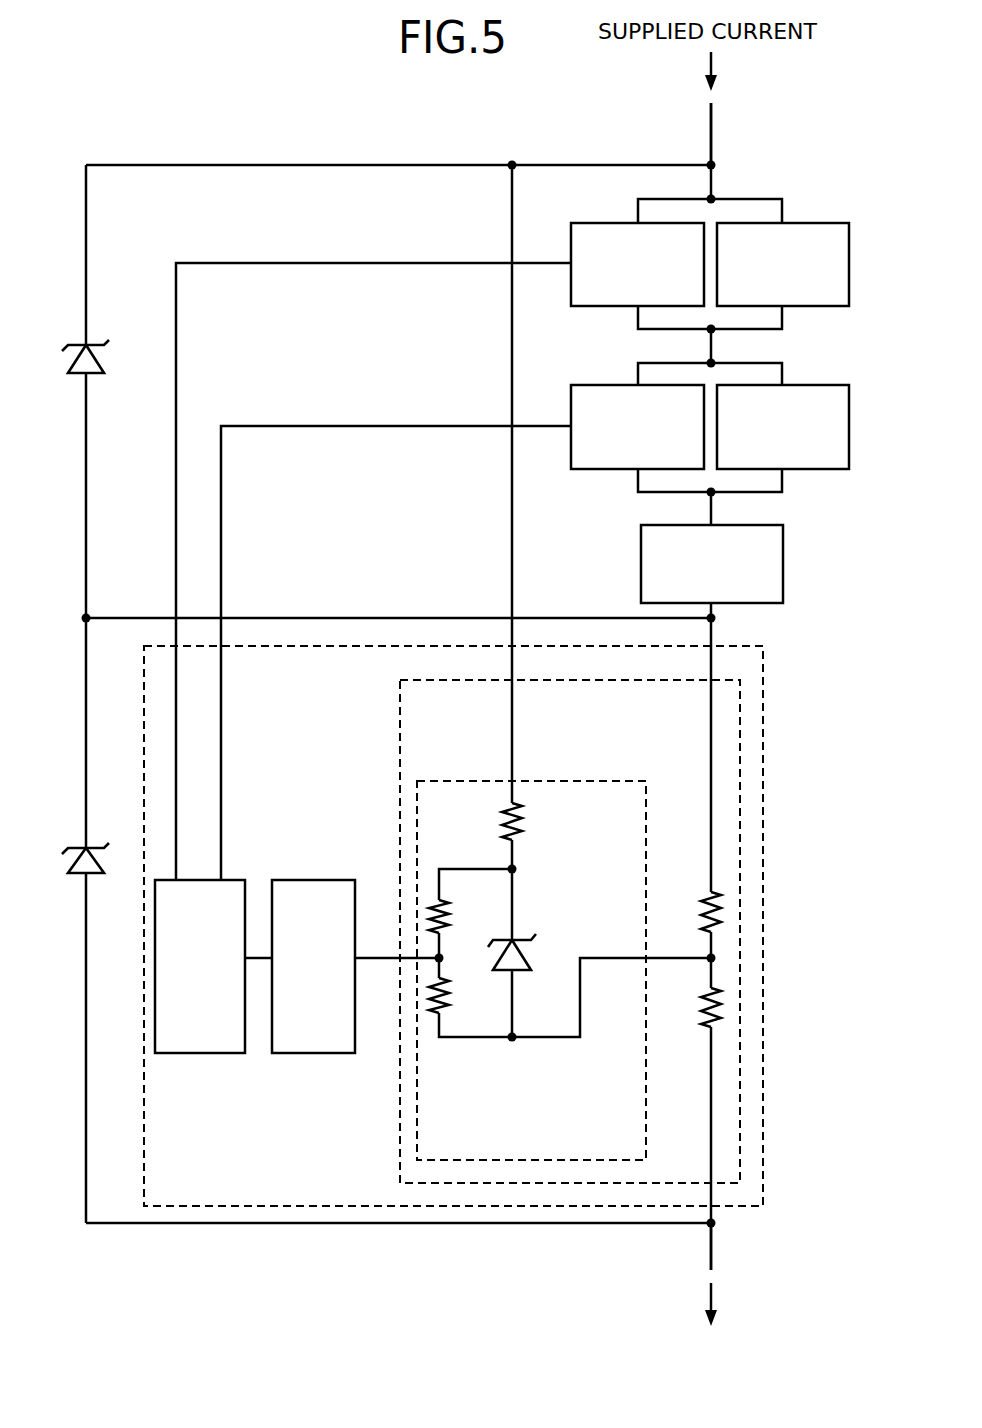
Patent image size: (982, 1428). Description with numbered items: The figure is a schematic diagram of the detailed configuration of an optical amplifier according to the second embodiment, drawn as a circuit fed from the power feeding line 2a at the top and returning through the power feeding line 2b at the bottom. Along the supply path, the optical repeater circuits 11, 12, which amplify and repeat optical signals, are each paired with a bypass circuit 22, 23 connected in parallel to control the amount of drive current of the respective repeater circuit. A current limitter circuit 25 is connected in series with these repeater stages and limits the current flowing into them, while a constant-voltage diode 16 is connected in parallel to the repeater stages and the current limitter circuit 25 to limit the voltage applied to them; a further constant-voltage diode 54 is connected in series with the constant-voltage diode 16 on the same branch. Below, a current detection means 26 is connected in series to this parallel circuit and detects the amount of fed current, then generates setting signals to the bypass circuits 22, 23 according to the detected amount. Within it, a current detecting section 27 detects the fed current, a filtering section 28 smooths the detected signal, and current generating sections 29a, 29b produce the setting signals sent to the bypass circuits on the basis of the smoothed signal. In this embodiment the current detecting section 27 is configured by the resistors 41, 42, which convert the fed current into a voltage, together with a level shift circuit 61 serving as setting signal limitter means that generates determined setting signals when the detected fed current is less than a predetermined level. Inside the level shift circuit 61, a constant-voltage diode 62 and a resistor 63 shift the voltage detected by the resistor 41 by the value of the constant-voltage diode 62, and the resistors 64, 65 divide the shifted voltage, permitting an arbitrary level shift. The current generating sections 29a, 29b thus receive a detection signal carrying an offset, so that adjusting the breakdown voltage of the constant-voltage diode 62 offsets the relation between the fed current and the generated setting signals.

The power feeding line 2a is at (711, 140).
The power feeding line 2b is at (716, 1250).
The optical repeater circuit 11 is at (820, 222).
The optical repeater circuit 12 is at (820, 385).
The constant-voltage diode 16 is at (103, 352).
The bypass circuit 22 is at (605, 222).
The bypass circuit 23 is at (605, 385).
The current limitter circuit 25 is at (784, 562).
The current detection means 26 is at (144, 1180).
The current detecting section 27 is at (400, 712).
The filtering section 28 is at (322, 880).
The current generating section 29a is at (212, 987).
The current generating section 29b is at (200, 1054).
The resistor 41 is at (700, 915).
The resistor 42 is at (700, 1011).
The constant-voltage diode 54 is at (100, 875).
The level shift circuit 61 is at (417, 806).
The constant-voltage diode 62 is at (531, 954).
The resistor 63 is at (524, 823).
The resistor 64 is at (452, 916).
The resistor 65 is at (450, 996).